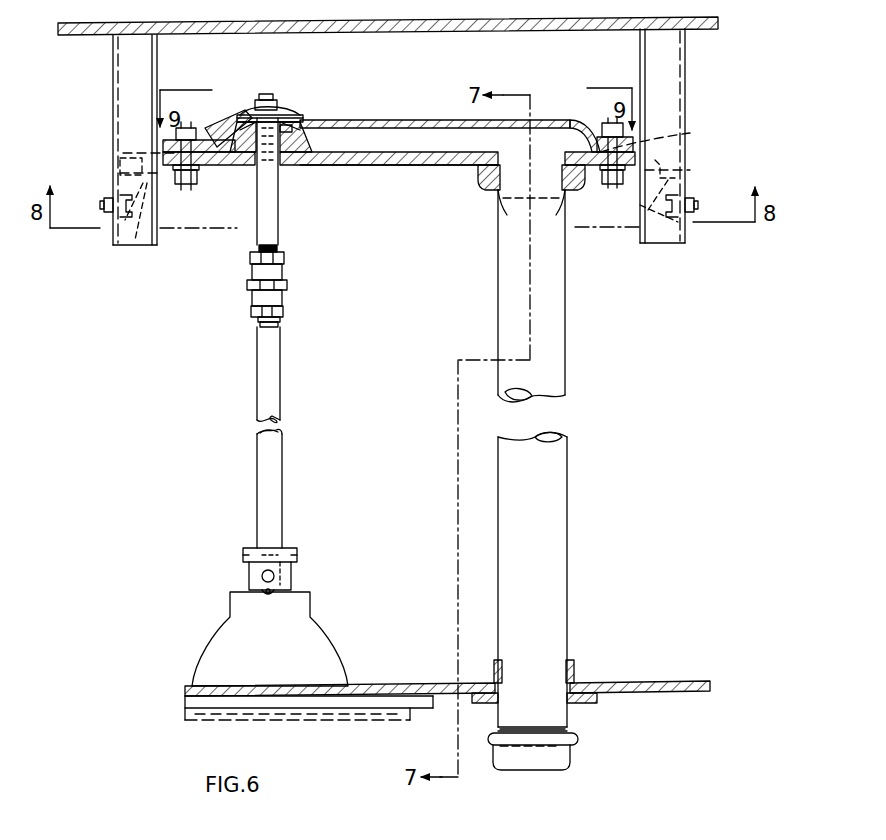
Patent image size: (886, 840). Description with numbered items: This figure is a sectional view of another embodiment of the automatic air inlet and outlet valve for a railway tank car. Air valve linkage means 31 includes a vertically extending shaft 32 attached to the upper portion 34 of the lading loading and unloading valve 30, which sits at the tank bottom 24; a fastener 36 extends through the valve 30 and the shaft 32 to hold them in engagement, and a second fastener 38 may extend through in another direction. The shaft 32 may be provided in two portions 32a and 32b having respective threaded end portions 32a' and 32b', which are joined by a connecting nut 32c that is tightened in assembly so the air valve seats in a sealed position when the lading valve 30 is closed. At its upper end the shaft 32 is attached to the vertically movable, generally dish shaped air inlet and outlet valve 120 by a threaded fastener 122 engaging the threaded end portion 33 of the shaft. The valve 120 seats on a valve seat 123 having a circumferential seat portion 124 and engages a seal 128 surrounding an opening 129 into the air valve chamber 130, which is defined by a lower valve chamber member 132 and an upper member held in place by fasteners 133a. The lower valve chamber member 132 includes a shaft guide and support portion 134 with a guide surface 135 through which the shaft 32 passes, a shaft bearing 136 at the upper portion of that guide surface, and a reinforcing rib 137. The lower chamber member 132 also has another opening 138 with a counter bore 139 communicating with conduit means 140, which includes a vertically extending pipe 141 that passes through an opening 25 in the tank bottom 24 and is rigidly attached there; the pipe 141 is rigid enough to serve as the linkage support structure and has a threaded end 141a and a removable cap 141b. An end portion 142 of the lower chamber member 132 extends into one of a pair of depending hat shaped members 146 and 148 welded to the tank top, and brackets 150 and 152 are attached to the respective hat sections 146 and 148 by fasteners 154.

The depending hat shaped member 146 is at (658, 67).
The depending hat shaped member 148 is at (135, 63).
The bracket 150 is at (660, 187).
The end portion of lower chamber member 142 is at (140, 155).
The bracket 152 is at (137, 248).
The fastener 154 is at (110, 214).
The lower valve chamber member 132 is at (392, 162).
The air valve chamber 130 is at (417, 145).
The fastener 133a is at (592, 133).
The guide surface 135 is at (232, 168).
The shaft bearing 136 is at (240, 116).
The shaft guide and support portion 134 is at (293, 165).
The shaft portion 32b is at (301, 181).
The threaded fastener 122 is at (300, 108).
The air inlet and outlet valve 120 is at (249, 114).
The threaded end portion of shaft 33 is at (266, 96).
The valve seat 123 is at (298, 114).
The circumferential seat portion 124 is at (312, 112).
The seal 128 is at (310, 118).
The opening into air valve chamber 129 is at (290, 133).
The reinforcing rib 137 is at (400, 167).
The opening in lower chamber member 138 is at (500, 175).
The counter bore 139 is at (500, 212).
The conduit means 140 is at (578, 371).
The vertically extending pipe 141 is at (578, 197).
The threaded end portion of shaft portion 32b' is at (308, 250).
The connecting nut 32c is at (277, 297).
The threaded end portion of shaft portion 32a' is at (314, 333).
The shaft portion 32a is at (310, 375).
The air valve linkage means 31 is at (255, 468).
The vertically extending shaft 32 is at (265, 497).
The fastener 36 is at (297, 552).
The upper portion of valve 34 is at (288, 578).
The second fastener 38 is at (262, 574).
The lading loading and unloading valve 30 is at (307, 640).
The tank bottom 24 is at (698, 690).
The opening in tank bottom 25 is at (571, 678).
The threaded end 141a is at (560, 727).
The removable cap 141b is at (572, 758).